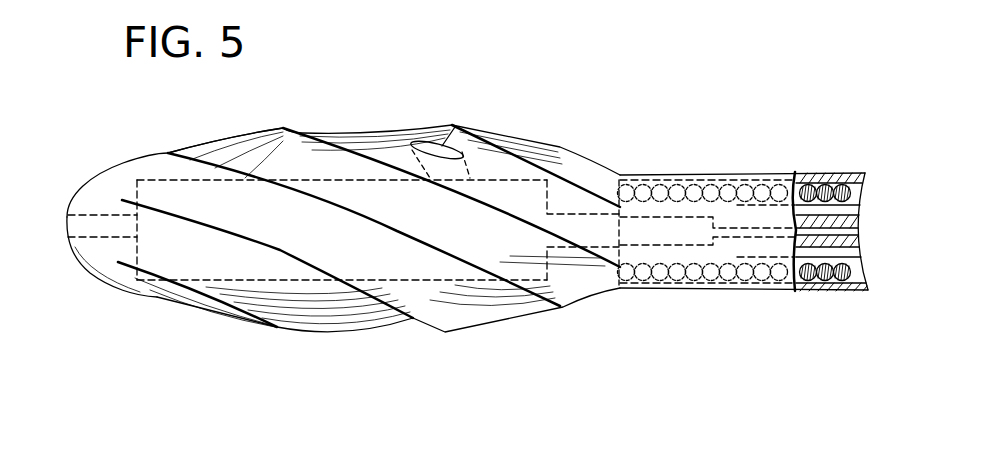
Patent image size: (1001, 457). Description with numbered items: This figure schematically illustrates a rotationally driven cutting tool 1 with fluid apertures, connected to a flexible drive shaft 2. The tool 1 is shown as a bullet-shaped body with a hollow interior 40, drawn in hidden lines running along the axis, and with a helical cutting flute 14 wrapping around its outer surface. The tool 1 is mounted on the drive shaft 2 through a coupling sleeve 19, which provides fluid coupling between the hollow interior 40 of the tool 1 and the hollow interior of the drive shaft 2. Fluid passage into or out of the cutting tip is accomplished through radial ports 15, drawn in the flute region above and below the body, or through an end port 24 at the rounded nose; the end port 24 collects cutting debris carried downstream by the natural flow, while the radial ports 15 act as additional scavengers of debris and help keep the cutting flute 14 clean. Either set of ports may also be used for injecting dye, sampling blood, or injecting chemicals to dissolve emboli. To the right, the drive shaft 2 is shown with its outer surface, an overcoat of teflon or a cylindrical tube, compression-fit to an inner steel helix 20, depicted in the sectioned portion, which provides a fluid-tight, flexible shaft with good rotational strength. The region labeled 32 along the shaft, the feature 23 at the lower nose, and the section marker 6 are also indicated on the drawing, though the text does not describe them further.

The cutting tool 1 is at (367, 118).
The drive shaft 2 is at (634, 172).
The section line 6- 6 is at (468, 87).
The cutting flute 14 is at (290, 130).
The radial ports 15 is at (460, 129).
The coupling sleeve 19 is at (567, 244).
The inner steel helix 20 is at (862, 198).
The tip 23 is at (83, 264).
The end port 24 is at (67, 220).
The reinforcing elements 32 is at (752, 168).
The hollow interior 40 is at (441, 231).